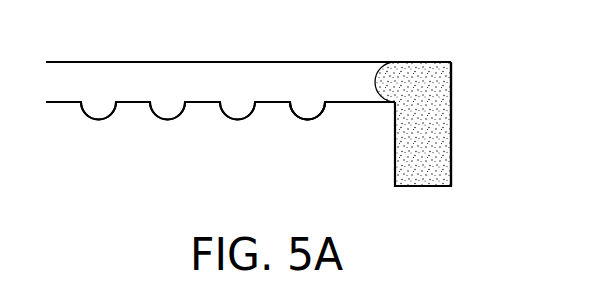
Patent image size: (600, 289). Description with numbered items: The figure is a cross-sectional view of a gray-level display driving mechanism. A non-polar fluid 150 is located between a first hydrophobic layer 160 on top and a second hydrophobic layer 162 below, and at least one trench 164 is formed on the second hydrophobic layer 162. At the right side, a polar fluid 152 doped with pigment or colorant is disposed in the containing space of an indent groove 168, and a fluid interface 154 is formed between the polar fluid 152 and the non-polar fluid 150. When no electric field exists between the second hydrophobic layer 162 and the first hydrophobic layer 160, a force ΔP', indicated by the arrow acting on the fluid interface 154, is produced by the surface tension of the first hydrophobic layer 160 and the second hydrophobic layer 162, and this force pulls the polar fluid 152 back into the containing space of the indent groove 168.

The non-polar fluid 150 is at (289, 73).
The first hydrophobic layer 160 is at (78, 61).
The second hydrophobic layer 162 is at (55, 103).
The trench 164 is at (308, 121).
The polar fluid 152 is at (422, 168).
The fluid interface 154 is at (379, 74).
The indent groove 168 is at (449, 118).